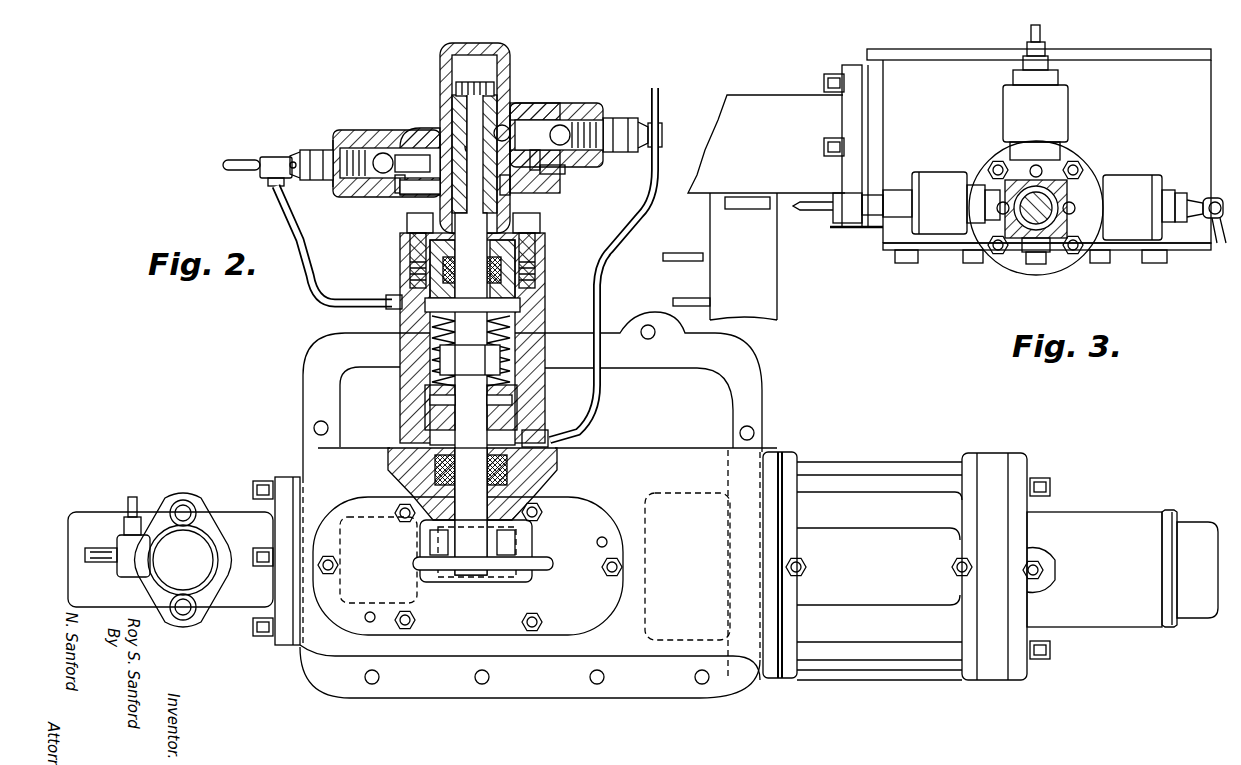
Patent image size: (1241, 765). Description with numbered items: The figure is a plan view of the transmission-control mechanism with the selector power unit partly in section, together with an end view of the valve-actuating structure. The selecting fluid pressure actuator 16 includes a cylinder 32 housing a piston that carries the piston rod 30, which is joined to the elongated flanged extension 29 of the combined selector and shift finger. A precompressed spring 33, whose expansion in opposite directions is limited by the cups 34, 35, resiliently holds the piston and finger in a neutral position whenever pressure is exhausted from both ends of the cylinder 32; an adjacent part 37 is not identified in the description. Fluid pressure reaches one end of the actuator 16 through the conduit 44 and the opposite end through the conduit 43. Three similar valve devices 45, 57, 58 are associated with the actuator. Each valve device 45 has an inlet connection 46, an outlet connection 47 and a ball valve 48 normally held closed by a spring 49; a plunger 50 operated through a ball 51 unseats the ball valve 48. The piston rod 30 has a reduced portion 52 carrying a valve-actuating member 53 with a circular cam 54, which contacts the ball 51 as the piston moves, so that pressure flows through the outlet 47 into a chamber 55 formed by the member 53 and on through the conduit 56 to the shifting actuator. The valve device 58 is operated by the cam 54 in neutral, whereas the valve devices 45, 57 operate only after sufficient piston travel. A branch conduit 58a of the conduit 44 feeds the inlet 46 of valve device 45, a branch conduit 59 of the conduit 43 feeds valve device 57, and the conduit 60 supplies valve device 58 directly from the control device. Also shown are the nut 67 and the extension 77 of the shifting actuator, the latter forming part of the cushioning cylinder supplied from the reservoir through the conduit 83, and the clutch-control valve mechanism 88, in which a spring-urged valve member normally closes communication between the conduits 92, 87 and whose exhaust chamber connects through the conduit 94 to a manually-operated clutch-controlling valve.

In FIG. 2, the selecting fluid pressure actuator 16 is at (554, 277).
In FIG. 2, the elongated flanged extension 29 is at (440, 568).
In FIG. 2, the piston rod 30 is at (480, 489).
In FIG. 2, the cylinder 32 is at (406, 280).
In FIG. 2, the spring 33 is at (432, 326).
In FIG. 2, the cup 34 is at (398, 299).
In FIG. 2, the cup 35 is at (440, 358).
In FIG. 2, the bushing 37 is at (430, 399).
In FIG. 2, the conduit 43 is at (659, 96).
In FIG. 3, the conduit 43 is at (1209, 241).
In FIG. 2, the conduit 44 is at (236, 163).
In FIG. 3, the conduit 44 is at (818, 209).
In FIG. 2, the valve device 45 is at (341, 129).
In FIG. 3, the valve device 45 is at (945, 233).
In FIG. 2, the inlet connection 46 is at (333, 160).
In FIG. 2, the outlet connection 47 is at (536, 170).
In FIG. 2, the ball valve 48 is at (388, 153).
In FIG. 2, the spring 49 is at (383, 152).
In FIG. 2, the plunger 50 is at (425, 155).
In FIG. 2, the ball 51 is at (420, 196).
In FIG. 2, the reduced portion 52 is at (470, 102).
In FIG. 3, the reduced portion 52 is at (1060, 188).
In FIG. 2, the valve-actuating member 53 is at (490, 126).
In FIG. 3, the valve-actuating member 53 is at (1055, 238).
In FIG. 2, the circular cam 54 is at (530, 112).
In FIG. 3, the circular cam 54 is at (1020, 240).
In FIG. 2, the chamber 55 is at (508, 186).
In FIG. 2, the conduit 56 is at (566, 170).
In FIG. 2, the valve device 57 is at (503, 125).
In FIG. 3, the valve device 57 is at (1140, 232).
In FIG. 2, the valve device 58 is at (408, 229).
In FIG. 3, the valve device 58 is at (1064, 122).
In FIG. 2, the branch conduit 58a is at (300, 162).
In FIG. 2, the branch conduit 59 is at (662, 136).
In FIG. 3, the branch conduit 59 is at (1205, 199).
In FIG. 3, the conduit 60 is at (1040, 42).
In FIG. 2, the nut 67 is at (134, 556).
In FIG. 2, the extension 77 is at (875, 461).
In FIG. 2, the conduit 83 is at (1046, 572).
In FIG. 3, the conduit 87 is at (688, 292).
In FIG. 2, the valve mechanism 88 is at (207, 523).
In FIG. 3, the valve mechanism 88 is at (789, 302).
In FIG. 2, the conduit 92 is at (134, 500).
In FIG. 2, the conduit 94 is at (98, 548).
In FIG. 3, the conduit 94 is at (682, 253).